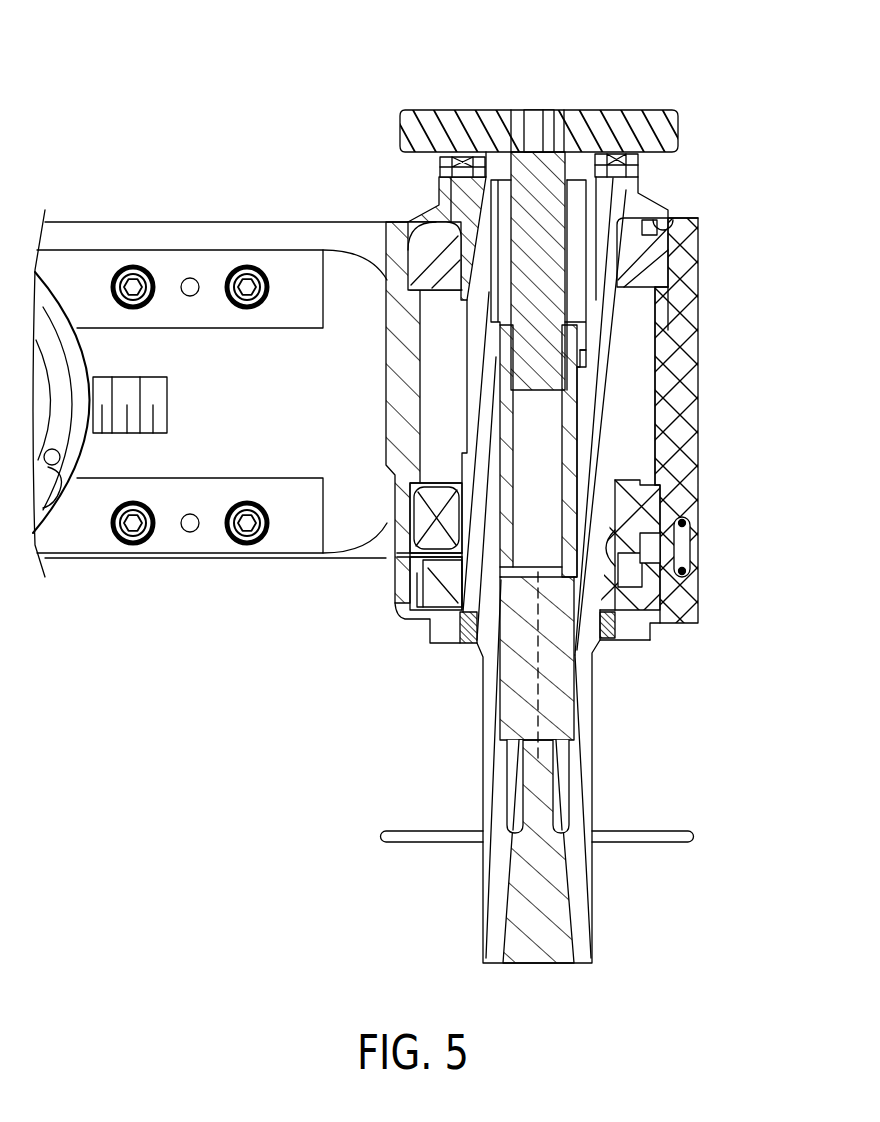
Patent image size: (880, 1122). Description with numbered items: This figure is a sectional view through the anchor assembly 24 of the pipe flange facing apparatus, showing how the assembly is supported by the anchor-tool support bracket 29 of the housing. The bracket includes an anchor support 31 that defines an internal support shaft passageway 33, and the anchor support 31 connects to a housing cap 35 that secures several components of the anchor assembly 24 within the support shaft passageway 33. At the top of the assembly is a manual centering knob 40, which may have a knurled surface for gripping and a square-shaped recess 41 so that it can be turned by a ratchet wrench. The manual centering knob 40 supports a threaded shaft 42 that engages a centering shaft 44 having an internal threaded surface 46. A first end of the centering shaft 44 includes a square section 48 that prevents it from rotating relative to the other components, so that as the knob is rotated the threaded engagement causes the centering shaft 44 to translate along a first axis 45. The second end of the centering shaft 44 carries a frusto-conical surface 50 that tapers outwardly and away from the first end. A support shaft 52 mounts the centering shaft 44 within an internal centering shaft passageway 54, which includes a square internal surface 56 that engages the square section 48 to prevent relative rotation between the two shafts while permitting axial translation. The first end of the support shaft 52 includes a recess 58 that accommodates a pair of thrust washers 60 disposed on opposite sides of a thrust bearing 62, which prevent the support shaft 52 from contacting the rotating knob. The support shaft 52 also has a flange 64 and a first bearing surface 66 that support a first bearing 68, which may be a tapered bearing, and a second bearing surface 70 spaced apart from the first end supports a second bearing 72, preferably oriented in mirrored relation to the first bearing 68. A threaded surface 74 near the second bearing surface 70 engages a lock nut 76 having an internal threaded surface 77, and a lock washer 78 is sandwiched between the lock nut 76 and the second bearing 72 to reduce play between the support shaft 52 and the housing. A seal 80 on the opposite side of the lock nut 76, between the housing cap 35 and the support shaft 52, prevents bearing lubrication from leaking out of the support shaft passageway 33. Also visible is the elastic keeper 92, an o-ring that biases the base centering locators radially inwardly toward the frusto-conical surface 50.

The anchor assembly 24 is at (478, 80).
The anchor-tool support bracket 29 is at (295, 222).
The anchor support 31 is at (699, 335).
The support shaft passageway 33 is at (440, 431).
The housing cap 35 is at (396, 607).
The manual centering knob 40 is at (637, 110).
The square-shaped recess 41 is at (548, 140).
The threaded shaft 42 is at (643, 180).
The centering shaft 44 is at (580, 410).
The first axis 45 is at (547, 663).
The internal threaded surface 46 is at (567, 427).
The square section 48 is at (586, 349).
The frusto-conical surface 50 is at (571, 866).
The support shaft 52 is at (466, 378).
The centering shaft passageway 54 is at (497, 275).
The square internal surface 56 is at (567, 262).
The recess 58 is at (613, 150).
The thrust washers 60 is at (462, 150).
The thrust bearing 62 is at (441, 161).
The flange 64 is at (698, 218).
The first bearing surface 66 is at (420, 238).
The first bearing 68 is at (386, 281).
The second bearing surface 70 is at (410, 503).
The second bearing 72 is at (406, 553).
The threaded surface 74 is at (645, 588).
The lock nut 76 is at (650, 632).
The internal threaded surface 77 is at (618, 520).
The lock washer 78 is at (650, 530).
The seal 80 is at (460, 633).
The elastic keeper 92 is at (657, 830).